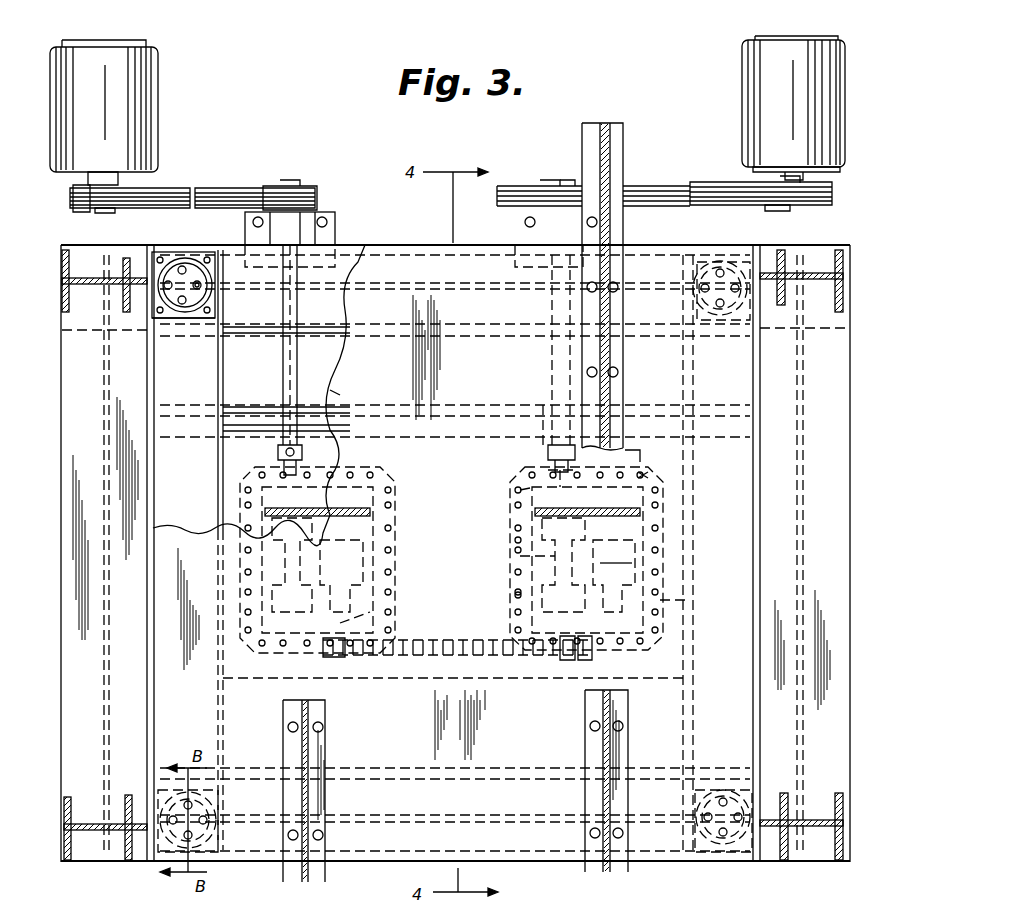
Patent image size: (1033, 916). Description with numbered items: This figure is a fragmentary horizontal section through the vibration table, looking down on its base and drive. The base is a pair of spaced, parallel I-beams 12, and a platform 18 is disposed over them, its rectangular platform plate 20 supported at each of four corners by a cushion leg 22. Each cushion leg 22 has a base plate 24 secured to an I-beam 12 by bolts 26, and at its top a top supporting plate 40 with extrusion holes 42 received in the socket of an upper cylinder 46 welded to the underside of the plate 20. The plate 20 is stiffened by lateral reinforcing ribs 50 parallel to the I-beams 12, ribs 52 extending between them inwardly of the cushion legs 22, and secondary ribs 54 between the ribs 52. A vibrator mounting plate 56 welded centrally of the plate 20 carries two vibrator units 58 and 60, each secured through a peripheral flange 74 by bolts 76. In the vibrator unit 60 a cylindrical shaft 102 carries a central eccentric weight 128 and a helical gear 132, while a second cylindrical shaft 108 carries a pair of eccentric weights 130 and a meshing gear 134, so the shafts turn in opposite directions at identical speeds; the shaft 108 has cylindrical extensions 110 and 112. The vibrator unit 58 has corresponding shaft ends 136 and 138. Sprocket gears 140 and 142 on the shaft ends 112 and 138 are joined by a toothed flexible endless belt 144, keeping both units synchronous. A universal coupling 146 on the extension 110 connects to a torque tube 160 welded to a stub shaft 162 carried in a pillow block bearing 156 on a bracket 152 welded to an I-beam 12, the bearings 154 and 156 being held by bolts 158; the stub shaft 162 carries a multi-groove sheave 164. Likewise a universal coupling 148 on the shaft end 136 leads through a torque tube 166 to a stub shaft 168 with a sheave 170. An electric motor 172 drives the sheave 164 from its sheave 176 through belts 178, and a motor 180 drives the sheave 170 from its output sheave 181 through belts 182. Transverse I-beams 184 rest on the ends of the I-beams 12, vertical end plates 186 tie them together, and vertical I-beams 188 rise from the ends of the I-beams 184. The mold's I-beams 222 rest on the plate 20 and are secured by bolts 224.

The I-beams 12 is at (150, 322).
The platform 18 is at (435, 240).
The platform plate 20 is at (190, 530).
The cushion leg 22 is at (170, 320).
The base plate 24 is at (200, 320).
The bolts 26 is at (207, 257).
The top supporting plate 40 is at (165, 255).
The extrusion holes 42 is at (212, 287).
The upper cylinder 46 is at (208, 305).
The lateral reinforcing ribs 50 is at (175, 247).
The ribs 52 is at (224, 378).
The secondary ribs 54 is at (320, 420).
The vibrator mounting plate 56 is at (235, 452).
The vibrator unit 58 is at (400, 510).
The vibrator unit 60 is at (505, 526).
The peripheral flange 74 is at (628, 458).
The bolts 76 is at (683, 505).
The cylindrical shaft 102 is at (680, 600).
The second cylindrical shaft 108 is at (518, 558).
The cylindrical extension 110 is at (545, 470).
The cylindrical extension 112 is at (562, 656).
The eccentric weight 128 is at (617, 554).
The eccentric weights 130 is at (514, 543).
The helical gear 132 is at (655, 472).
The gear 134 is at (516, 490).
The shaft end 136 is at (283, 478).
The shaft end 138 is at (380, 618).
The sprocket gear 140 is at (588, 658).
The sprocket gear 142 is at (323, 652).
The toothed flexible endless belt 144 is at (450, 640).
The universal coupling 146 is at (543, 408).
The universal coupling 148 is at (305, 452).
The bracket 152 is at (520, 242).
The pillow block bearing 154 is at (318, 212).
The pillow block bearing 156 is at (522, 192).
The bolts 158 is at (330, 217).
The torque tube 160 is at (553, 316).
The stub shaft 162 is at (562, 184).
The multi-groove sheave 164 is at (532, 184).
The torque tube 166 is at (297, 310).
The stub shaft 168 is at (285, 184).
The multi-groove sheave 170 is at (268, 186).
The electric motor 172 is at (745, 62).
The sheave 176 is at (762, 210).
The endless belts 178 is at (694, 184).
The motor 180 is at (150, 67).
The output sheave 181 is at (82, 210).
The belts 182 is at (182, 190).
The transverse I-beams 184 is at (140, 403).
The vertical end plates 186 is at (61, 250).
The vertical I-beams 188 is at (69, 302).
The I-beams 222 is at (622, 390).
The bolts 224 is at (618, 370).